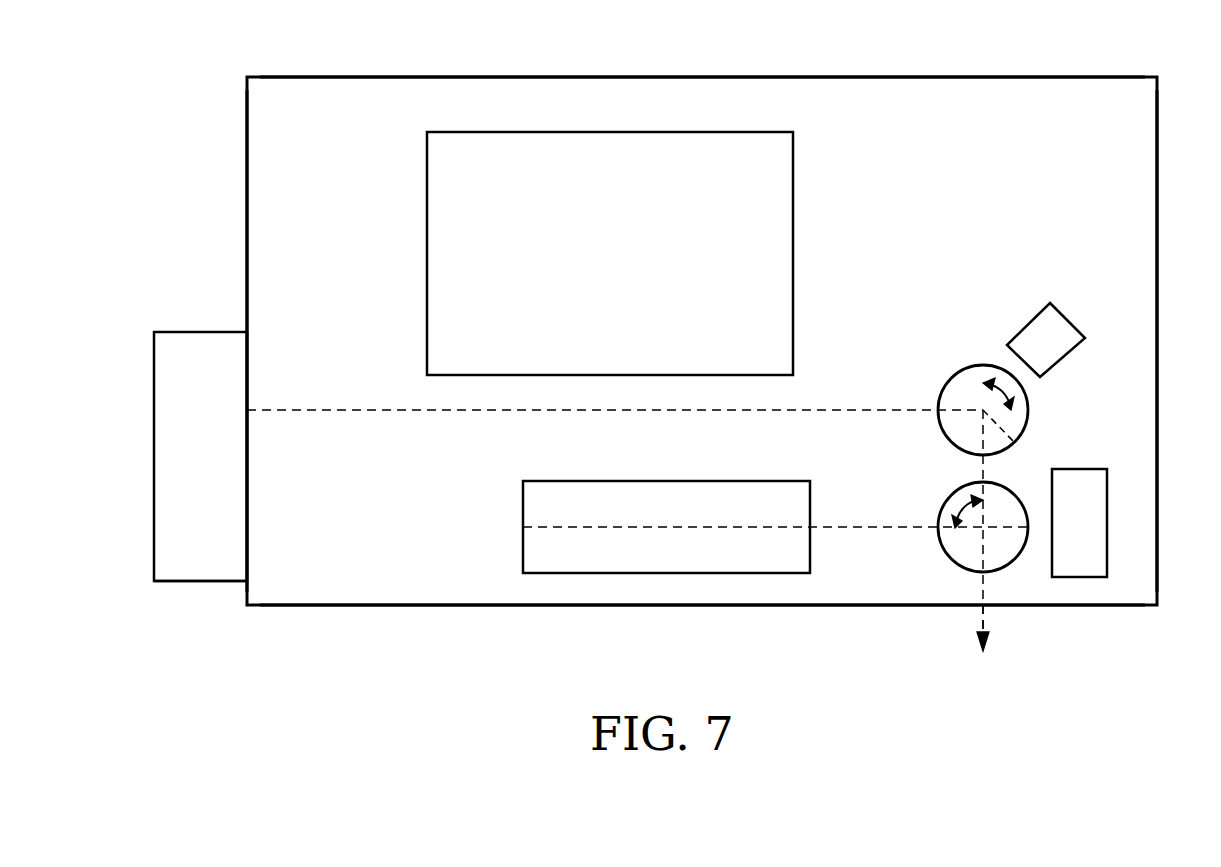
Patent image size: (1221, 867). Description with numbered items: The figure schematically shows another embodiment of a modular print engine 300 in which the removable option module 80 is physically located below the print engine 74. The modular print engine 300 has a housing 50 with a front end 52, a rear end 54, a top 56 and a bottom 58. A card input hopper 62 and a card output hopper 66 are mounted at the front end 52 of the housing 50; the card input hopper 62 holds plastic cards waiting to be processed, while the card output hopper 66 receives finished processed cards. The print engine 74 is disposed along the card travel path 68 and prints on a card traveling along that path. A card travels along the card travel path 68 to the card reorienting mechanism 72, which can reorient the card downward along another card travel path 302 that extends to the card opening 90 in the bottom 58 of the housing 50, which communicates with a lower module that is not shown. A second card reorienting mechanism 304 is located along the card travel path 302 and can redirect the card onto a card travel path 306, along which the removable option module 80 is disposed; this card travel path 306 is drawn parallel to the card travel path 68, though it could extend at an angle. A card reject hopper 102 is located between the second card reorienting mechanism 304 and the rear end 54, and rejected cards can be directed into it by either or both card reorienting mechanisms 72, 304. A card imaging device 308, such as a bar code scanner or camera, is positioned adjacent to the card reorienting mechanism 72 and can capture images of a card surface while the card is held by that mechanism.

The modular print engine 300 is at (150, 145).
The housing 50 is at (336, 66).
The front end 52 is at (247, 118).
The rear end 54 is at (1158, 302).
The top 56 is at (400, 76).
The bottom 58 is at (352, 606).
The card input hopper 62 is at (202, 345).
The card output hopper 66 is at (204, 572).
The card travel path 68 is at (428, 412).
The card reorienting mechanism 72 is at (963, 370).
The print engine 74 is at (793, 212).
The removable option module 80 is at (703, 480).
The card opening 90 is at (982, 602).
The card reject hopper 102 is at (1081, 468).
The card travel path 302 is at (985, 471).
The second card reorienting mechanism 304 is at (962, 487).
The card travel path 306 is at (840, 525).
The card imaging device 308 is at (1071, 318).